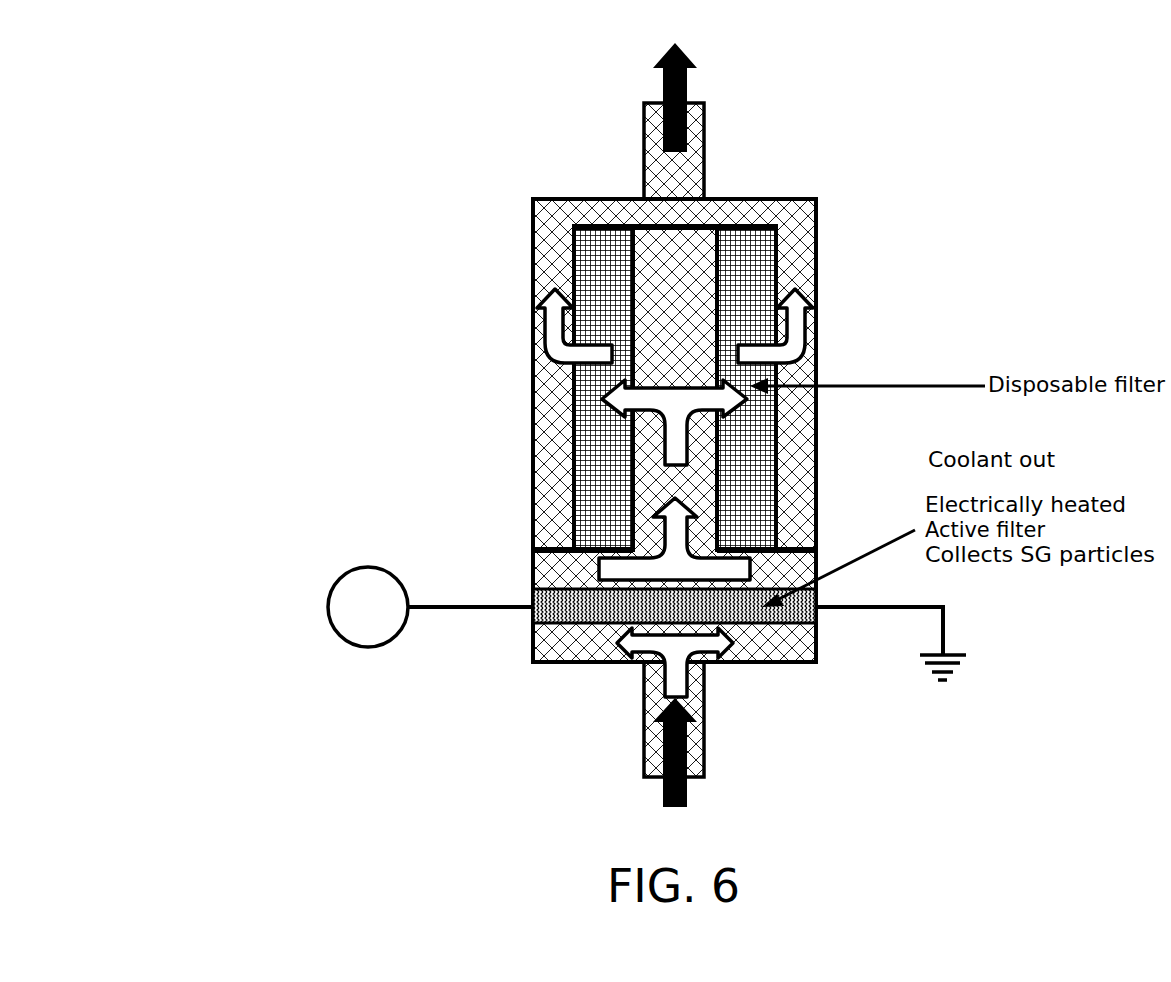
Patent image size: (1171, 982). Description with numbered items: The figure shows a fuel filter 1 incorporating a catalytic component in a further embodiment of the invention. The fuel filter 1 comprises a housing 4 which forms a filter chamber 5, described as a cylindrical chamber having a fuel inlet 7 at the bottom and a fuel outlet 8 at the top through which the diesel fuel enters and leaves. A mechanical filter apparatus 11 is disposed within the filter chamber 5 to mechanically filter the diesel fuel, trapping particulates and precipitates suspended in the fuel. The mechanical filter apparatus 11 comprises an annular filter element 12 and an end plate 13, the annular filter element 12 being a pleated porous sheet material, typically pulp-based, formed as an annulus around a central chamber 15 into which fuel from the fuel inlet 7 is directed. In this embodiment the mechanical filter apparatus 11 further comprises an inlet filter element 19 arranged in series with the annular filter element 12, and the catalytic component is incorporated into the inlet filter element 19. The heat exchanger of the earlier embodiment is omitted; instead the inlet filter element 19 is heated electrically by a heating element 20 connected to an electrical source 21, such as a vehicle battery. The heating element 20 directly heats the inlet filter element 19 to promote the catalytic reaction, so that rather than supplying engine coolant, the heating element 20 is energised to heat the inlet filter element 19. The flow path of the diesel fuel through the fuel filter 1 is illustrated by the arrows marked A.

The fuel filter 1 is at (342, 168).
The housing 4 is at (806, 204).
The filter chamber 5 is at (802, 245).
The fuel inlet 7 is at (655, 710).
The fuel outlet 8 is at (652, 130).
The mechanical filter apparatus 11 is at (553, 263).
The annular filter element 12 is at (597, 250).
The end plate 13 is at (645, 228).
The central chamber 15 is at (675, 252).
The inlet filter element 19 is at (590, 620).
The heating element 20 is at (535, 598).
The electrical source 21 is at (332, 592).